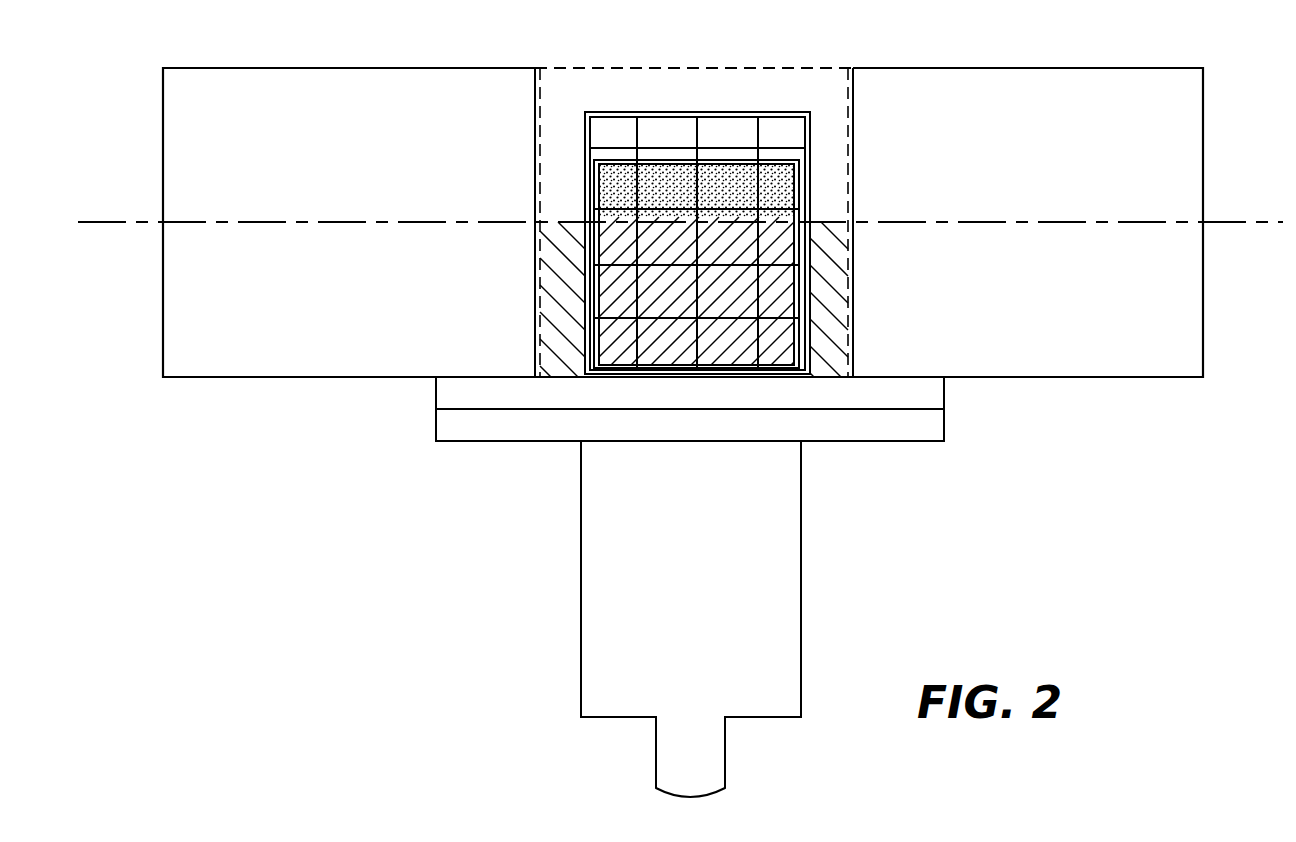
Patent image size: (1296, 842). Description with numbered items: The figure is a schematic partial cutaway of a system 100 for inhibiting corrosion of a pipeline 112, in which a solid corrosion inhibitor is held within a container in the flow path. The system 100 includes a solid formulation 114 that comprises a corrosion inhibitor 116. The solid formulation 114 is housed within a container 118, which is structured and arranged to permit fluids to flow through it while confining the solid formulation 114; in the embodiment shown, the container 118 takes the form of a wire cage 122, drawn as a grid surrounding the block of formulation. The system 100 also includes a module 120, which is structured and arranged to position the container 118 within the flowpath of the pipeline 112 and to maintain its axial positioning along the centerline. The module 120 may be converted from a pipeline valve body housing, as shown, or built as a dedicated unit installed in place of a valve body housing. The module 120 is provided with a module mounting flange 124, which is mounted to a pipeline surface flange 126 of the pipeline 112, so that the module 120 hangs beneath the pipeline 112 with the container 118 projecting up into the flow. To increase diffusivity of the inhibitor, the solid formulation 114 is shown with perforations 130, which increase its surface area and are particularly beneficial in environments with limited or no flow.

The system 100 is at (855, 473).
The pipeline 112 is at (1023, 68).
The solid formulation 114 is at (796, 185).
The corrosion inhibitor 116 is at (608, 188).
The container 118 is at (810, 147).
The module 120 is at (500, 445).
The wire cage 122 is at (697, 132).
The module mounting flange 124 is at (945, 425).
The pipeline surface flange 126 is at (945, 389).
The perforations 130 is at (800, 217).